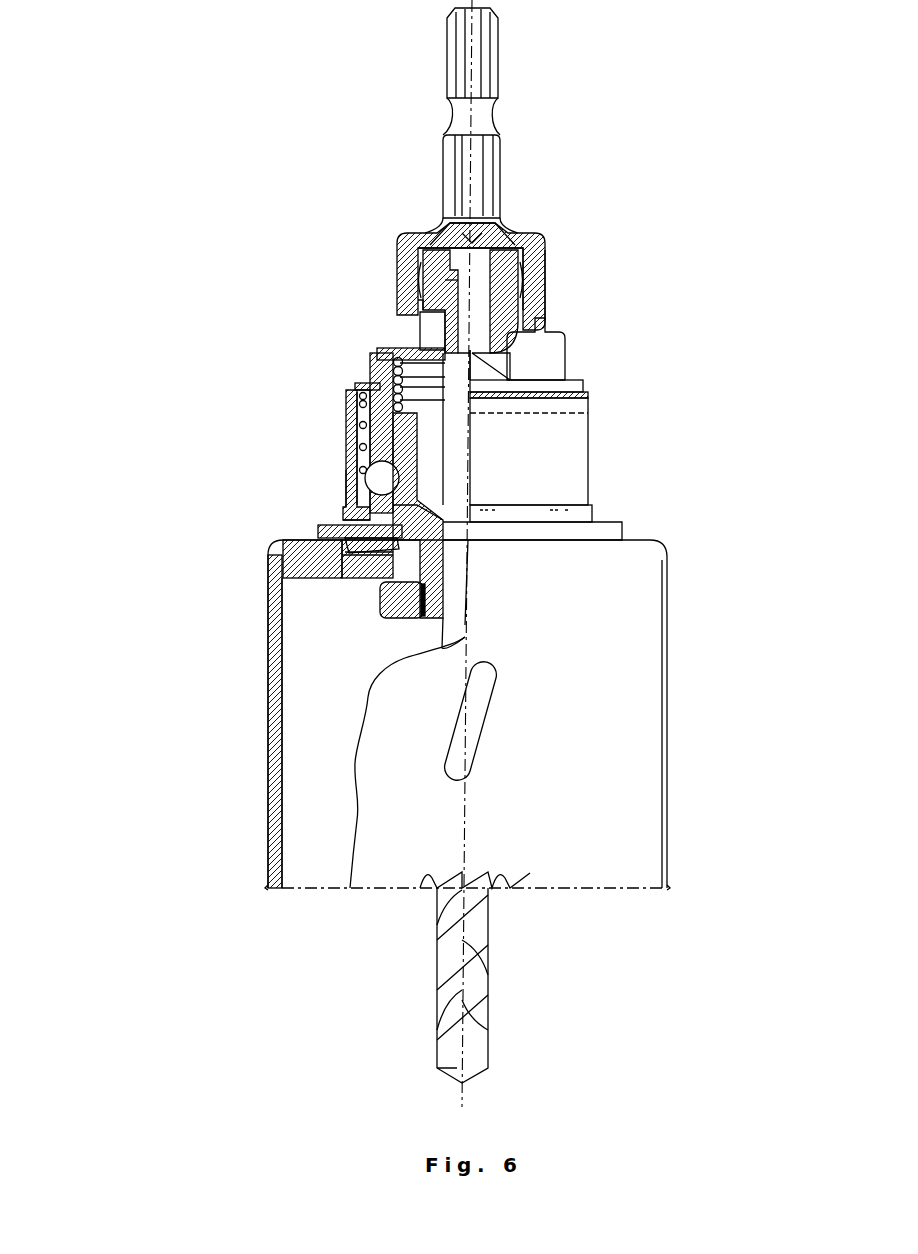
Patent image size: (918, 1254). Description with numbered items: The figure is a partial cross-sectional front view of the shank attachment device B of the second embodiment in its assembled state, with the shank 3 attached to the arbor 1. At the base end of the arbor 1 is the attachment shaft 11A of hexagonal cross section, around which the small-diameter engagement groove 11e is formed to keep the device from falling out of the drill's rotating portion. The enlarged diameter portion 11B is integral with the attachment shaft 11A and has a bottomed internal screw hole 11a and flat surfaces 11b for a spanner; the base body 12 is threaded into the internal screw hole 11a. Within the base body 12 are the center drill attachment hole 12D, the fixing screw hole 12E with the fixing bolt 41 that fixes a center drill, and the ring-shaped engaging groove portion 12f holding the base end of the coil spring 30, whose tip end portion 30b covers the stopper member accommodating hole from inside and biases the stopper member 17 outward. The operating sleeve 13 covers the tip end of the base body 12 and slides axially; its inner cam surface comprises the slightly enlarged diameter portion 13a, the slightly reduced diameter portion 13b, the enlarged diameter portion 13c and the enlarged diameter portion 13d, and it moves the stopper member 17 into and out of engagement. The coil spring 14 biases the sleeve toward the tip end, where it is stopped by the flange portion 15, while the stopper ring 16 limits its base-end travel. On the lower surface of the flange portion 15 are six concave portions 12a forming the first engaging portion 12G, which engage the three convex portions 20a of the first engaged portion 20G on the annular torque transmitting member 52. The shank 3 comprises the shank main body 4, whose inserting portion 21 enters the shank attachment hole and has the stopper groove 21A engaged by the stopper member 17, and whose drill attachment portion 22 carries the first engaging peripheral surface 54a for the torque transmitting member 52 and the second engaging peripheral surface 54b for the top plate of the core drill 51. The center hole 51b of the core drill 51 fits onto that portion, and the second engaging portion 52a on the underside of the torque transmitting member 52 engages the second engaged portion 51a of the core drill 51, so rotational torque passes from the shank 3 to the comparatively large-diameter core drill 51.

The shank attachment device B is at (353, 164).
The arbor 1 is at (567, 267).
The attachment shaft 11A is at (447, 53).
The engagement groove 11e is at (485, 115).
The enlarged diameter portion 11B is at (397, 250).
The internal screw hole 11a is at (420, 278).
The flat surface 11b is at (422, 289).
The base body 12 is at (495, 346).
The center drill attachment hole 12D is at (447, 293).
The fixing screw hole 12E is at (500, 298).
The engaging groove portion 12f is at (445, 335).
The first engaging portion 12G is at (203, 510).
The first engaged portion 20G is at (203, 510).
The concave portions 12a is at (203, 510).
The convex portions 20a is at (347, 513).
The operating sleeve 13 is at (157, 373).
The slightly enlarged diameter portion 13a is at (350, 498).
The slightly reduced diameter portion 13b is at (347, 483).
The enlarged diameter portion 13c is at (347, 440).
The enlarged diameter portion 13d is at (347, 408).
The coil spring 14 is at (352, 396).
The flange portion 15 is at (317, 532).
The stopper ring 16 is at (403, 378).
The stopper member 17 is at (430, 447).
The inserting portion 21 is at (520, 423).
The stopper groove 21A is at (398, 474).
The drill attachment portion 22 is at (430, 546).
The shank 3 is at (590, 494).
The shank main body 4 is at (428, 518).
The coil spring 30 is at (639, 349).
The tip end portion (supporting member) 30b is at (540, 358).
The fixing bolt 41 is at (455, 322).
The core drill 51 is at (655, 708).
The second engaged portion 51a is at (395, 575).
The center hole 51b is at (420, 563).
The annular torque transmitting member 52 is at (360, 527).
The second engaging portion 52a is at (358, 563).
The first engaging peripheral surface 54a is at (363, 543).
The second engaging peripheral surface 54b is at (405, 600).